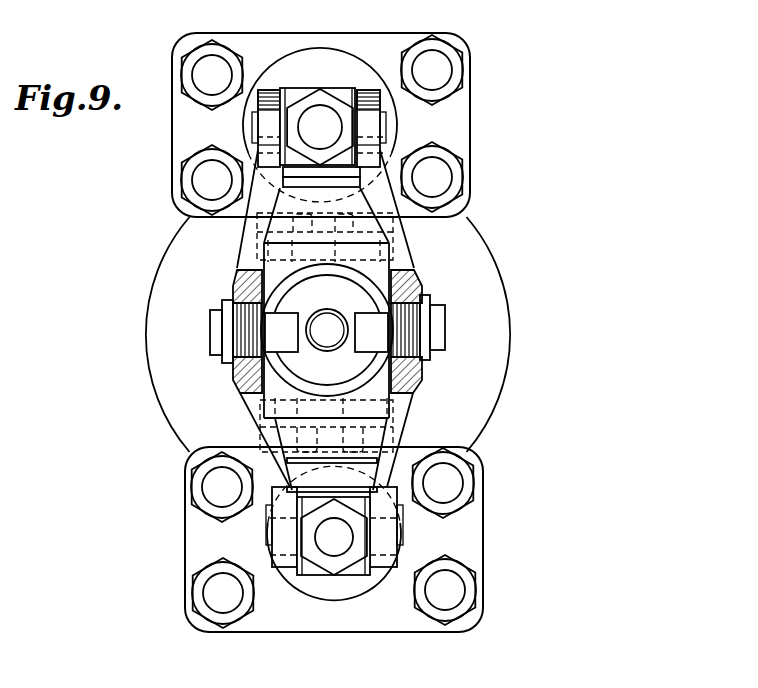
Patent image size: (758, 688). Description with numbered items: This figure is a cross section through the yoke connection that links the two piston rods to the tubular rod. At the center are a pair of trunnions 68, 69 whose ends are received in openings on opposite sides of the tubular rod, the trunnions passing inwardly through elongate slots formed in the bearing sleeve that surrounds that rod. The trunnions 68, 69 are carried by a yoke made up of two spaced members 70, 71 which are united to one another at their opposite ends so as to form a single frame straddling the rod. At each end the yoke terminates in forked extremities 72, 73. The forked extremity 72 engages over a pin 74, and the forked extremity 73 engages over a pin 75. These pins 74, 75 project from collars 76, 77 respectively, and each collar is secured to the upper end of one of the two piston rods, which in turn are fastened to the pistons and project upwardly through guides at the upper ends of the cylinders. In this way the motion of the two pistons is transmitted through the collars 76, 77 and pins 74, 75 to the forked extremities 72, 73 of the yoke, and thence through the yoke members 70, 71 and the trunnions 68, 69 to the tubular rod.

The trunnion 68 is at (377, 317).
The trunnion 69 is at (278, 313).
The spaced member of yoke 70 is at (423, 375).
The spaced member of yoke 71 is at (247, 376).
The forked extremity 72 is at (288, 565).
The forked extremity 73 is at (368, 117).
The pin 74 is at (395, 538).
The pin 75 is at (258, 128).
The collar 76 is at (360, 570).
The collar 77 is at (345, 92).